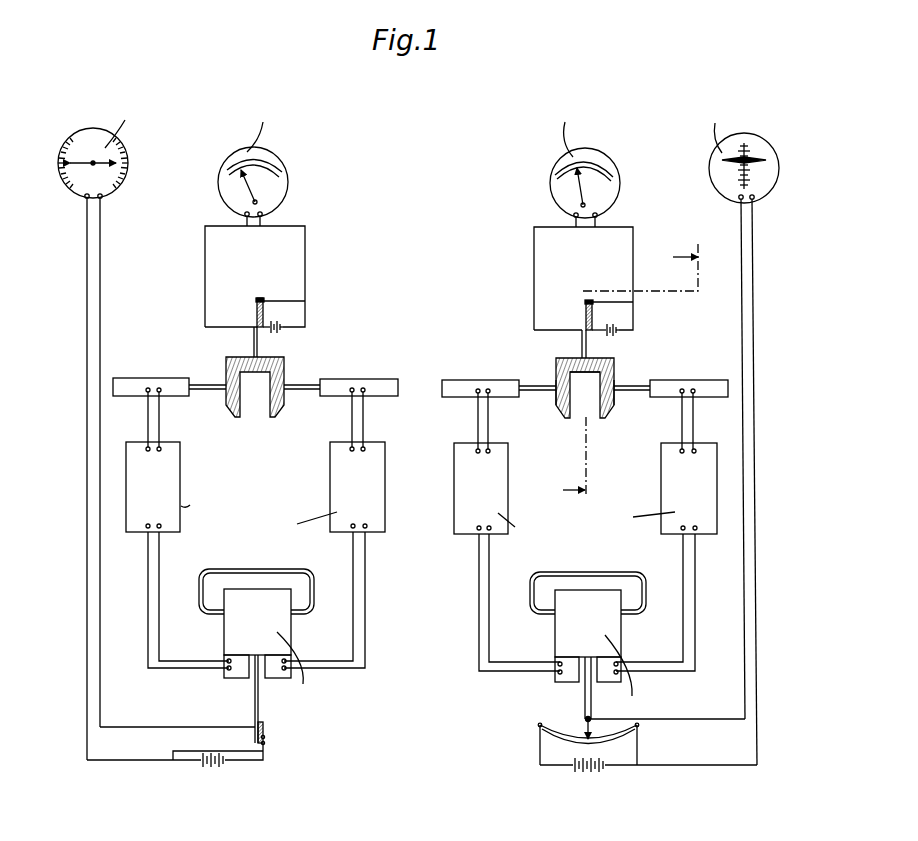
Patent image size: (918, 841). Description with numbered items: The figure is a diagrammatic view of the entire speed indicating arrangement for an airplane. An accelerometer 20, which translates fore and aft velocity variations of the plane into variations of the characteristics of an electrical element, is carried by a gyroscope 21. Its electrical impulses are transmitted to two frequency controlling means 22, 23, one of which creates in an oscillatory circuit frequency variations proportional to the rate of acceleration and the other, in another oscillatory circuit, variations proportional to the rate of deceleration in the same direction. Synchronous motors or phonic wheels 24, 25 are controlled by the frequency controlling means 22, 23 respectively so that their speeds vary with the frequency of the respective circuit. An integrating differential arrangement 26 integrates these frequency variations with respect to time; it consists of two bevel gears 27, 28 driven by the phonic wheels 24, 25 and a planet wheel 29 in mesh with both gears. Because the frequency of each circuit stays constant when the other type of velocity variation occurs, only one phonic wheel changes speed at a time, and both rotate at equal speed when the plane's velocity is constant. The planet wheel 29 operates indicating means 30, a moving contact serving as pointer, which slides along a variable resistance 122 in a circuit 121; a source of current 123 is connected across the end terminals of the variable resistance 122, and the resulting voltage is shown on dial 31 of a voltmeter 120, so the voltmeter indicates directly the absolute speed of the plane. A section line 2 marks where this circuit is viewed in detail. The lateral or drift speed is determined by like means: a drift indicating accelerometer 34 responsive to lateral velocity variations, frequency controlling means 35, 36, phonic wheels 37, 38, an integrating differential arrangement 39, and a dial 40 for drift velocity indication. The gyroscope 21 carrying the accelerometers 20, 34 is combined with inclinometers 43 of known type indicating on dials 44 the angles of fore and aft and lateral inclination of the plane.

The section line 2 is at (638, 371).
The accelerometer 20 is at (570, 687).
The gyroscope 21 is at (242, 600).
The frequency controlling means 22 is at (505, 490).
The frequency controlling means 23 is at (673, 494).
The phonic wheel 24 is at (473, 381).
The phonic wheel 25 is at (680, 382).
The integrating differential arrangement 26 is at (573, 426).
The bevel gear 27 is at (562, 404).
The bevel gear 28 is at (610, 412).
The planet wheel 29 is at (612, 360).
The indicating means 30 is at (582, 343).
The dial 31 is at (597, 160).
The drift indicating accelerometer 34 is at (247, 687).
The frequency controlling means 35 is at (180, 497).
The frequency controlling means 36 is at (337, 487).
The phonic wheel 37 is at (150, 383).
The phonic wheel 38 is at (372, 383).
The integrating differential arrangement 39 is at (252, 411).
The dial 40 is at (263, 155).
The inclinometer 43 is at (265, 737).
The dial 44 is at (129, 163).
The voltmeter 120 is at (612, 187).
The circuit 121 is at (534, 258).
The variable resistance 122 is at (593, 312).
The source of current 123 is at (618, 335).